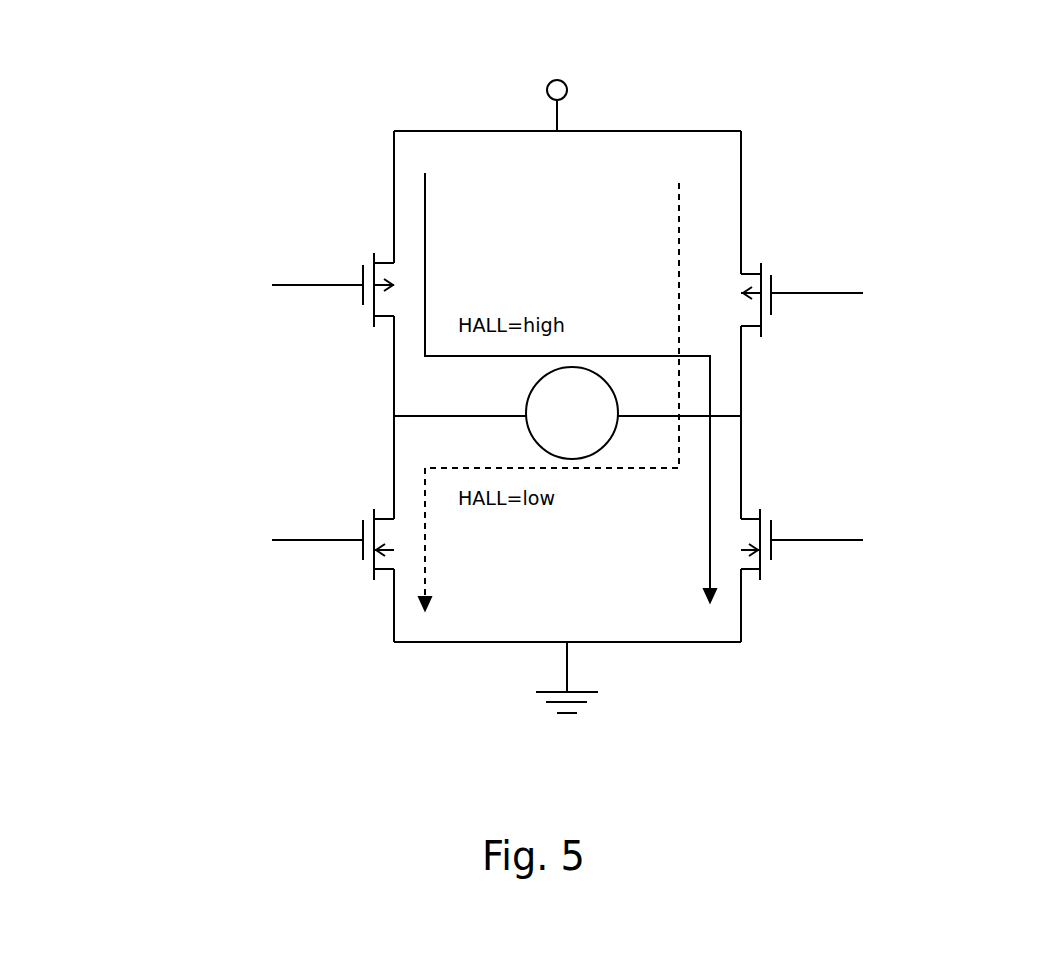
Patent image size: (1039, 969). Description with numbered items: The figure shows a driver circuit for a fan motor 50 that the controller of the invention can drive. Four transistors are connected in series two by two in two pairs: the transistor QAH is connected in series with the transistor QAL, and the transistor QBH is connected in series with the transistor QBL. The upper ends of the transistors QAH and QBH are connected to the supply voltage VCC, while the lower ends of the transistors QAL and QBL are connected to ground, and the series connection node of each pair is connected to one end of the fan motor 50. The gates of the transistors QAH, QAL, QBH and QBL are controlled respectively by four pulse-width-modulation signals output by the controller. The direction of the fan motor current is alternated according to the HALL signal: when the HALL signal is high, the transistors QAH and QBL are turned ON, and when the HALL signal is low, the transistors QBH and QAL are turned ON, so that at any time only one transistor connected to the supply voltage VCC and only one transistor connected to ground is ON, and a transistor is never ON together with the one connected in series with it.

The fan motor 50 is at (583, 438).
The transistor Q_AH QAH is at (243, 271).
The transistor Q_BH QBH is at (880, 276).
The transistor Q_AL QAL is at (248, 524).
The transistor Q_BL QBL is at (878, 524).
The supply voltage VCC is at (560, 85).